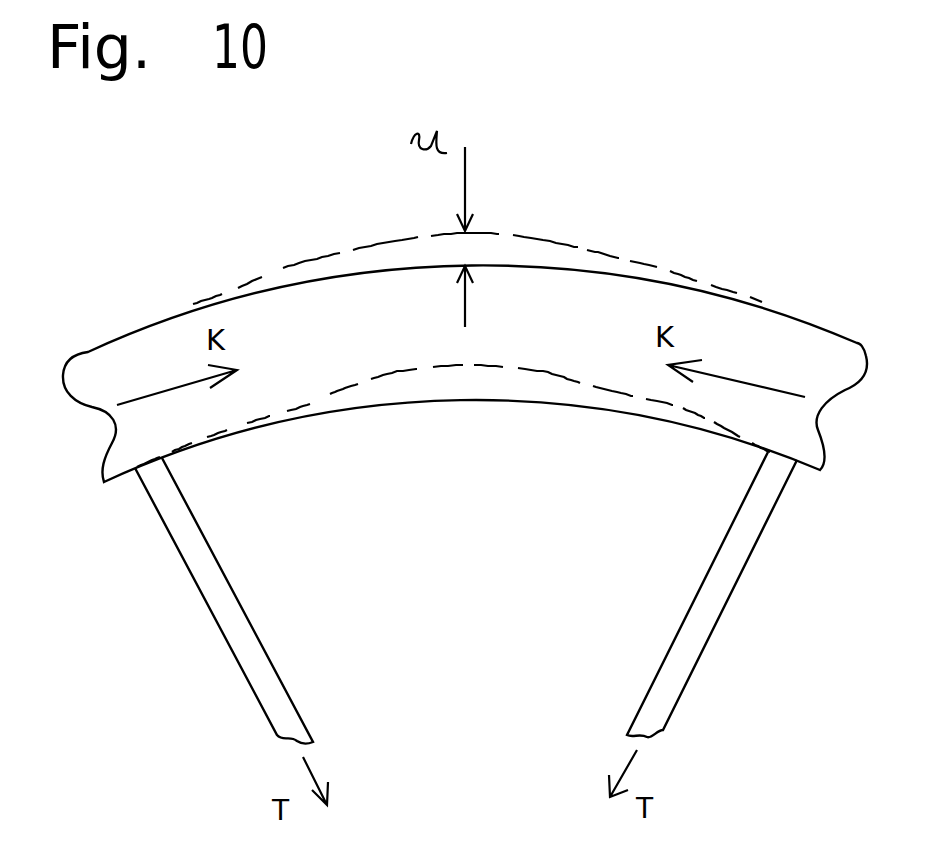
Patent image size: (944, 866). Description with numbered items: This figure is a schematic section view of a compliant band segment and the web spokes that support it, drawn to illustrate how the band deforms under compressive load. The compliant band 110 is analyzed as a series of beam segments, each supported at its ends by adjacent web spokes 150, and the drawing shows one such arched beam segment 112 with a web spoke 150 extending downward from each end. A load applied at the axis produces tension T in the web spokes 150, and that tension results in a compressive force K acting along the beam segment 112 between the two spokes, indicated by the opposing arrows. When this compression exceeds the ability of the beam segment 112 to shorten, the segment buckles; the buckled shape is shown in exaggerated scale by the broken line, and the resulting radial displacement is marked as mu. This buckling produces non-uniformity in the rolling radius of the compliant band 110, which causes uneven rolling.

The compliant band 110 is at (278, 275).
The beam segment 112 is at (384, 343).
The web spokes 150 is at (200, 597).